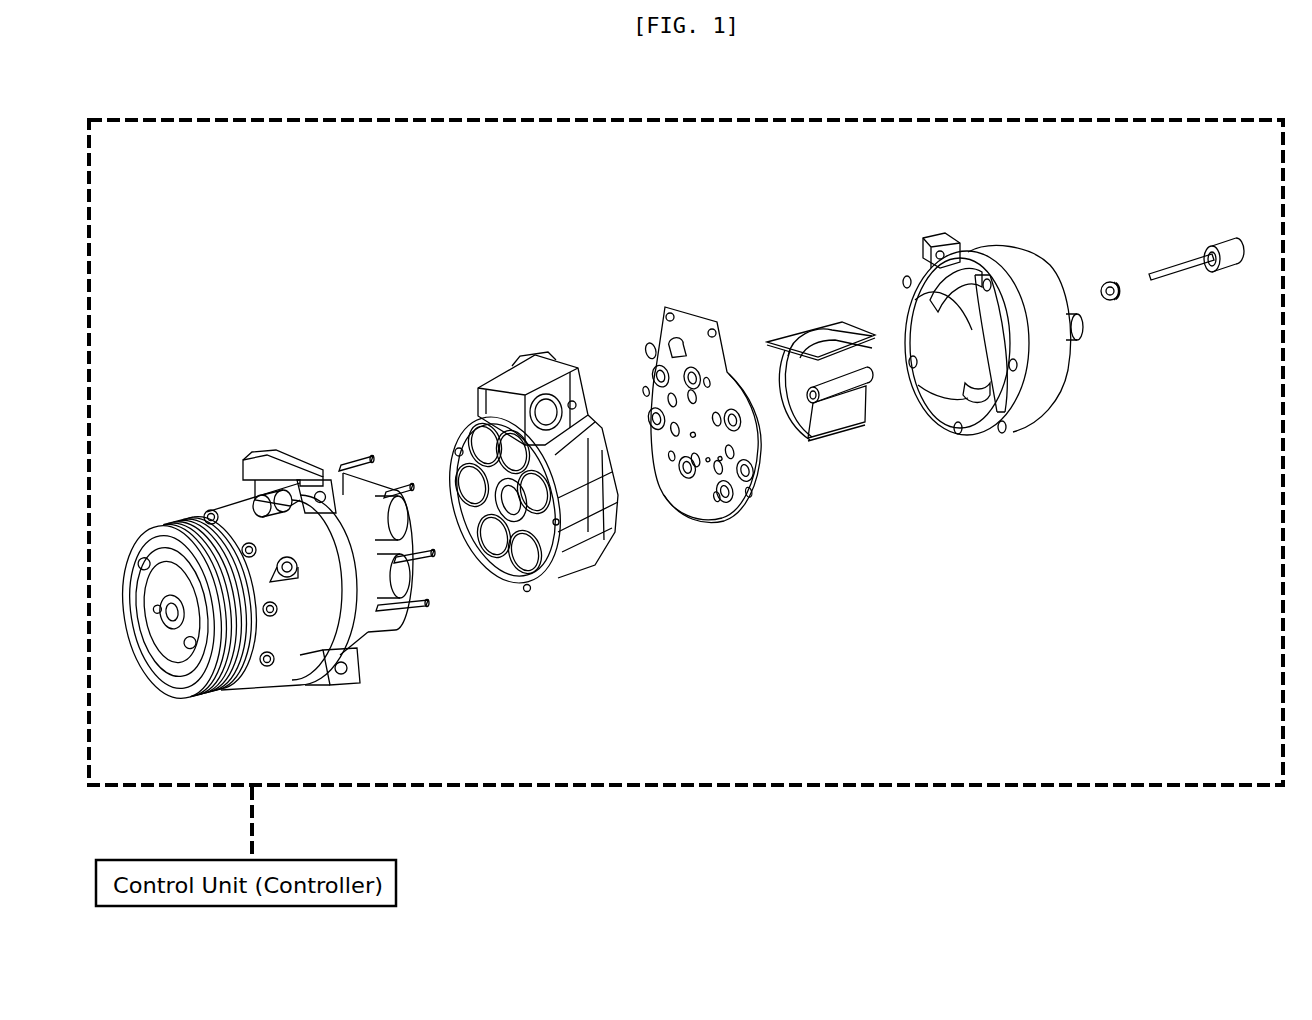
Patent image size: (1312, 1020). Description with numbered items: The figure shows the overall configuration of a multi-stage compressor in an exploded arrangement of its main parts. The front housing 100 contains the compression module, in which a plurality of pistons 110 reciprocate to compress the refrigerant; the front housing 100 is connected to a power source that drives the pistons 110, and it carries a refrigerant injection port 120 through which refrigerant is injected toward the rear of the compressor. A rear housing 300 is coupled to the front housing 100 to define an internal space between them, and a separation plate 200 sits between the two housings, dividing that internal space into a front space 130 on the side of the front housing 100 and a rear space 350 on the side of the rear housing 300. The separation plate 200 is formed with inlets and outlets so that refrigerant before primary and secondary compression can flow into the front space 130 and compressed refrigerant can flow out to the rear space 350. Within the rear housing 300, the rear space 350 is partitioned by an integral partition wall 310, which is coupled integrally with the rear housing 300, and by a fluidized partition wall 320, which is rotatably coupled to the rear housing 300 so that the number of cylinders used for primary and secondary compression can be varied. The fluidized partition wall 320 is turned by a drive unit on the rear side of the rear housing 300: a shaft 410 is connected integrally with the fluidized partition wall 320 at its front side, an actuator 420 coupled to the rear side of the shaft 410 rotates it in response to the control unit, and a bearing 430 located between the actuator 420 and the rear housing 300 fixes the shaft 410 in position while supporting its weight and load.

The front housing 100 is at (570, 565).
The pistons 110 is at (388, 600).
The refrigerant injection port 120 is at (546, 408).
The front space 130 is at (480, 440).
The separation plate 200 is at (683, 330).
The rear housing 300 is at (988, 248).
The integral partition wall 310 is at (933, 297).
The fluidized partition wall 320 is at (822, 340).
The rear space 350 is at (943, 372).
The shaft 410 is at (1172, 263).
The actuator 420 is at (1222, 243).
The bearing 430 is at (1113, 280).